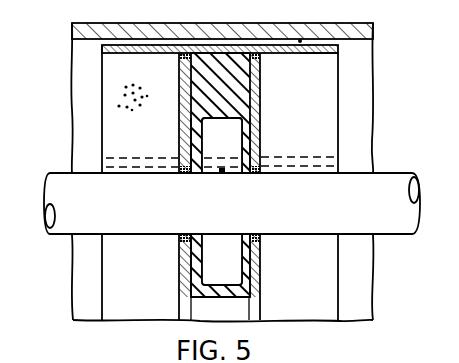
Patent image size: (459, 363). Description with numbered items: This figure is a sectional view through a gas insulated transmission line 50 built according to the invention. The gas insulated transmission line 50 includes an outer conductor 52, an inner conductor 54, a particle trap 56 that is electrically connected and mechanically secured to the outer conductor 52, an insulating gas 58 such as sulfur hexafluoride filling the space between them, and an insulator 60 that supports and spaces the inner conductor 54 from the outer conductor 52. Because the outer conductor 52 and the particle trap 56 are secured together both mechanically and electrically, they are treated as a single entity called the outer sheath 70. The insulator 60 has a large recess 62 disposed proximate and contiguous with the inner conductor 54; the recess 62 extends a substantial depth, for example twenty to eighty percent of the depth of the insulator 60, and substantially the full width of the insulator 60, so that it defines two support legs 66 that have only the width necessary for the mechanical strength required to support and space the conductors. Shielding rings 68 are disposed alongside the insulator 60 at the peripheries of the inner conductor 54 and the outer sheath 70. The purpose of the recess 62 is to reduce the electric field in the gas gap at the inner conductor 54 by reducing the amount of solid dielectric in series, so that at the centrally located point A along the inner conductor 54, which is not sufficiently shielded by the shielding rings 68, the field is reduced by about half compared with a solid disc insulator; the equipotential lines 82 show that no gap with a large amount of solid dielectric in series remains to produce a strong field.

The gas insulated transmission line 50 is at (56, 42).
The outer conductor 52 is at (326, 28).
The inner conductor 54 is at (395, 182).
The particle trap 56 is at (318, 58).
The insulating gas 58 is at (118, 96).
The insulator 60 is at (242, 101).
The recess 62 is at (201, 123).
The support legs 66 is at (193, 130).
The shielding rings 68 is at (252, 54).
The outer sheath 70 is at (133, 46).
The equipotential lines 82 is at (131, 171).
The point A is at (223, 176).